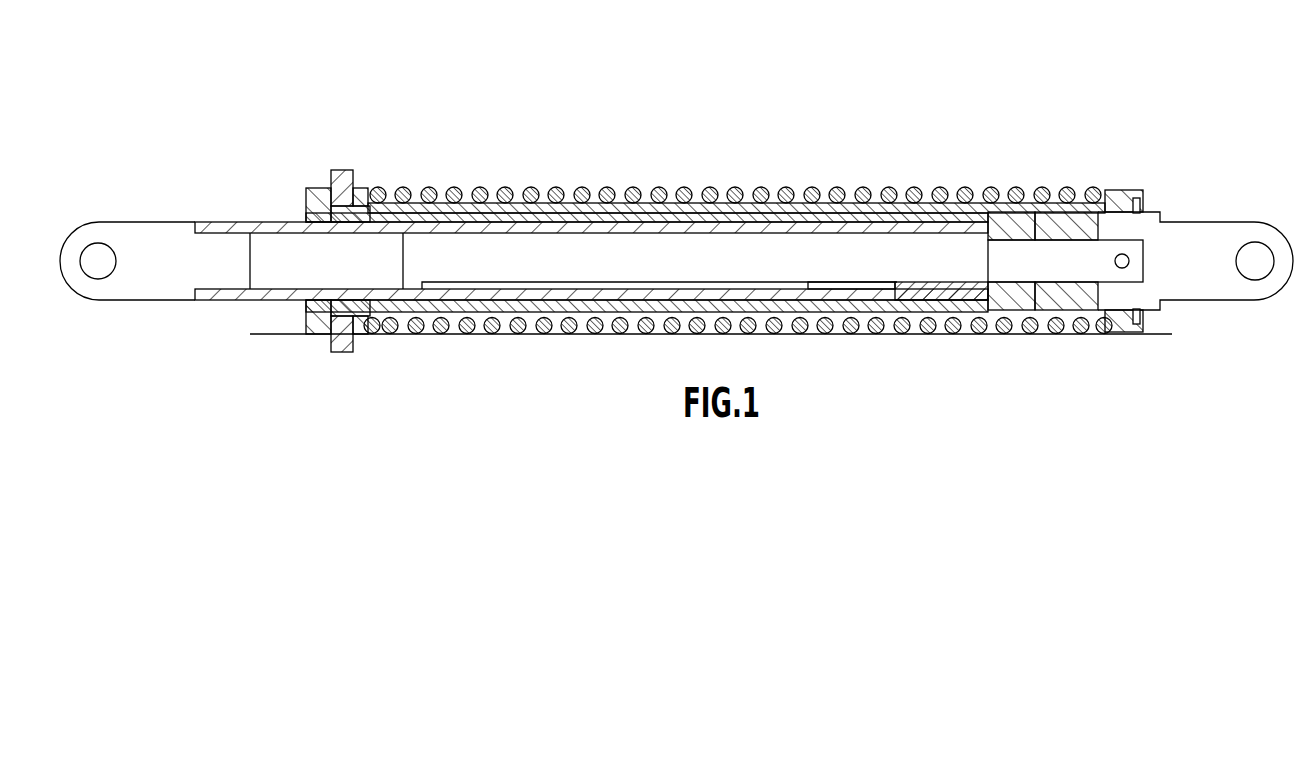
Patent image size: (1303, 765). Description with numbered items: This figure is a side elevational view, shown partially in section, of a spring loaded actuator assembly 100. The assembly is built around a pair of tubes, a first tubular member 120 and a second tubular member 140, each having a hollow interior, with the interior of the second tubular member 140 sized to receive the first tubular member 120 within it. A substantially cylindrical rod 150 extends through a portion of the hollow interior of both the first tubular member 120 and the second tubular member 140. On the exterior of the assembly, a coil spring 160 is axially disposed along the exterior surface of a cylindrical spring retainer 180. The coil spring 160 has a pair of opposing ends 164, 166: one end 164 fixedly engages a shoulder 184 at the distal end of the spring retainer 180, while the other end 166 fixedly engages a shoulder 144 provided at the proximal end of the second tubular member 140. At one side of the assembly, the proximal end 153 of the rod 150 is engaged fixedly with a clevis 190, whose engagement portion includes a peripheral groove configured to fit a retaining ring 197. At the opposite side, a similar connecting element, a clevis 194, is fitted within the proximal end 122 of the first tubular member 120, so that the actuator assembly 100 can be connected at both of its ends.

The spring loaded actuator assembly 100 is at (140, 64).
The first tubular member 120 is at (260, 300).
The proximal end of the first tubular member 122 is at (225, 300).
The second tubular member 140 is at (993, 300).
The shoulder 144 is at (331, 186).
The rod 150 is at (1062, 262).
The proximal end of the rod 153 is at (1134, 273).
The coil spring 160 is at (655, 189).
The end of the coil spring 164 is at (1098, 190).
The end of the coil spring 166 is at (360, 188).
The spring retainer 180 is at (1034, 207).
The shoulder 184 is at (1120, 190).
The clevis 190 is at (1224, 290).
The clevis 194 is at (94, 292).
The retaining ring 197 is at (1142, 204).